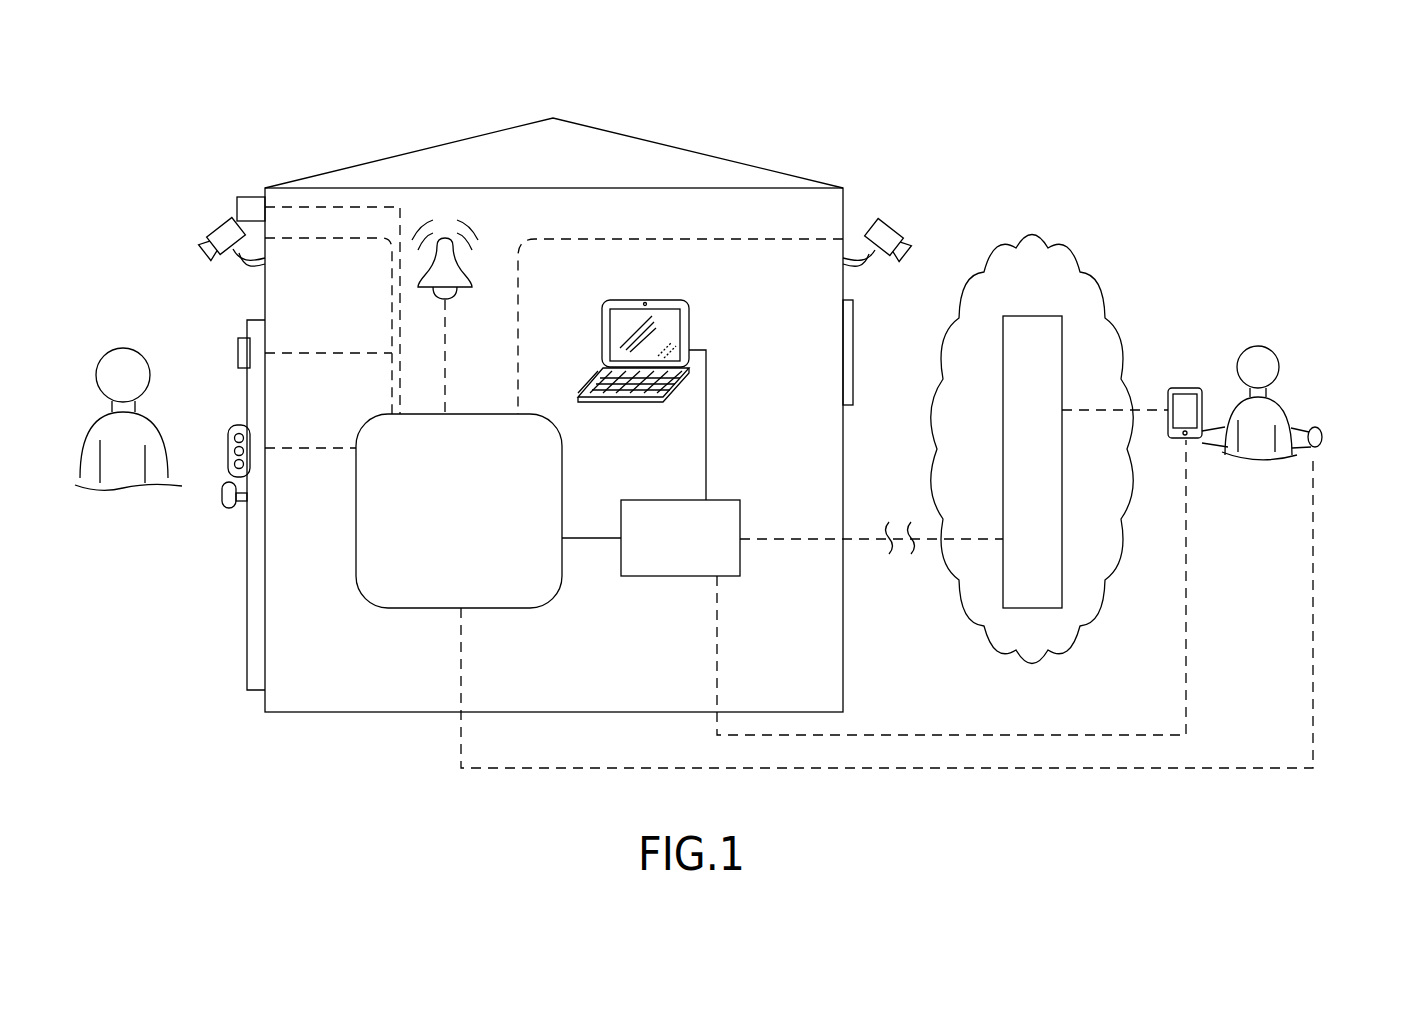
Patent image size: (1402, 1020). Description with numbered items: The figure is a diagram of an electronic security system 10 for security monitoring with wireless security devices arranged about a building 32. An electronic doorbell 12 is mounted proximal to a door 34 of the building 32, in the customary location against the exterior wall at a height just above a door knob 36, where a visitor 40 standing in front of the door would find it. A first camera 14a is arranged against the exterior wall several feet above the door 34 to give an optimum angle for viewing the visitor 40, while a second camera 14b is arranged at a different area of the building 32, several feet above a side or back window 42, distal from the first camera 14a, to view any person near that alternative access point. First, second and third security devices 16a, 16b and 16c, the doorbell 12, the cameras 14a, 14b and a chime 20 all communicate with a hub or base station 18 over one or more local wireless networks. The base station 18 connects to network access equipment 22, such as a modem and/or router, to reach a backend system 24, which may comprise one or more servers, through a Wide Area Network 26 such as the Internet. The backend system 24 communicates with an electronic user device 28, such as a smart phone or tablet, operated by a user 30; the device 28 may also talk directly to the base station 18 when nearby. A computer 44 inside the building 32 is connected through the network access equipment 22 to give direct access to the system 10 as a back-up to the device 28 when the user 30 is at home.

The electronic security system 10 is at (52, 136).
The electronic doorbell 12 is at (228, 445).
The first camera 14a is at (218, 226).
The second camera 14b is at (888, 222).
The first security device 16a is at (238, 352).
The second security device 16b is at (243, 197).
The third security device 16c is at (1322, 433).
The base station 18 is at (834, 591).
The chime 20 is at (487, 216).
The network access equipment 22 is at (658, 578).
The backend system 24 is at (1085, 462).
The Wide Area Network 26 is at (1048, 637).
The electronic user device 28 is at (1175, 387).
The user 30 is at (1278, 352).
The building 32 is at (335, 712).
The door 34 is at (247, 638).
The door knob 36 is at (223, 510).
The visitor 40 is at (108, 348).
The side or back window 42 is at (853, 386).
The computer 44 is at (690, 312).